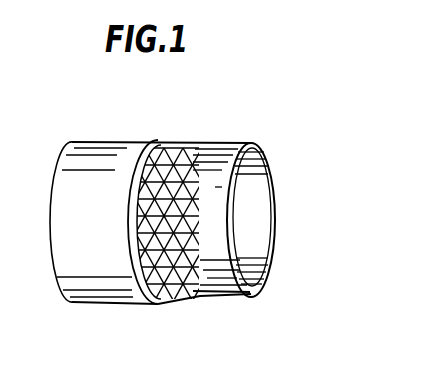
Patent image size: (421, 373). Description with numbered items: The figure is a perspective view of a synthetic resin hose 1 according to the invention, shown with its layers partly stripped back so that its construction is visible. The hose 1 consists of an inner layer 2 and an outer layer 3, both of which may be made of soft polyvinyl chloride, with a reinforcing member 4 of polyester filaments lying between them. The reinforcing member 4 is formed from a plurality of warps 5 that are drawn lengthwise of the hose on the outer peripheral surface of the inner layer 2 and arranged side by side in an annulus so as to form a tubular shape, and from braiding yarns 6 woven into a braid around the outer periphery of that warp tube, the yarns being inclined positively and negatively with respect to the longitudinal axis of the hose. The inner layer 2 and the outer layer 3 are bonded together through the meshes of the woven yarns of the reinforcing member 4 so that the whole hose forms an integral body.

The synthetic resin hose 1 is at (111, 310).
The inner layer 2 is at (240, 294).
The outer layer 3 is at (126, 138).
The reinforcing member 4 is at (172, 307).
The warps 5 is at (193, 294).
The braiding yarns 6 is at (181, 294).